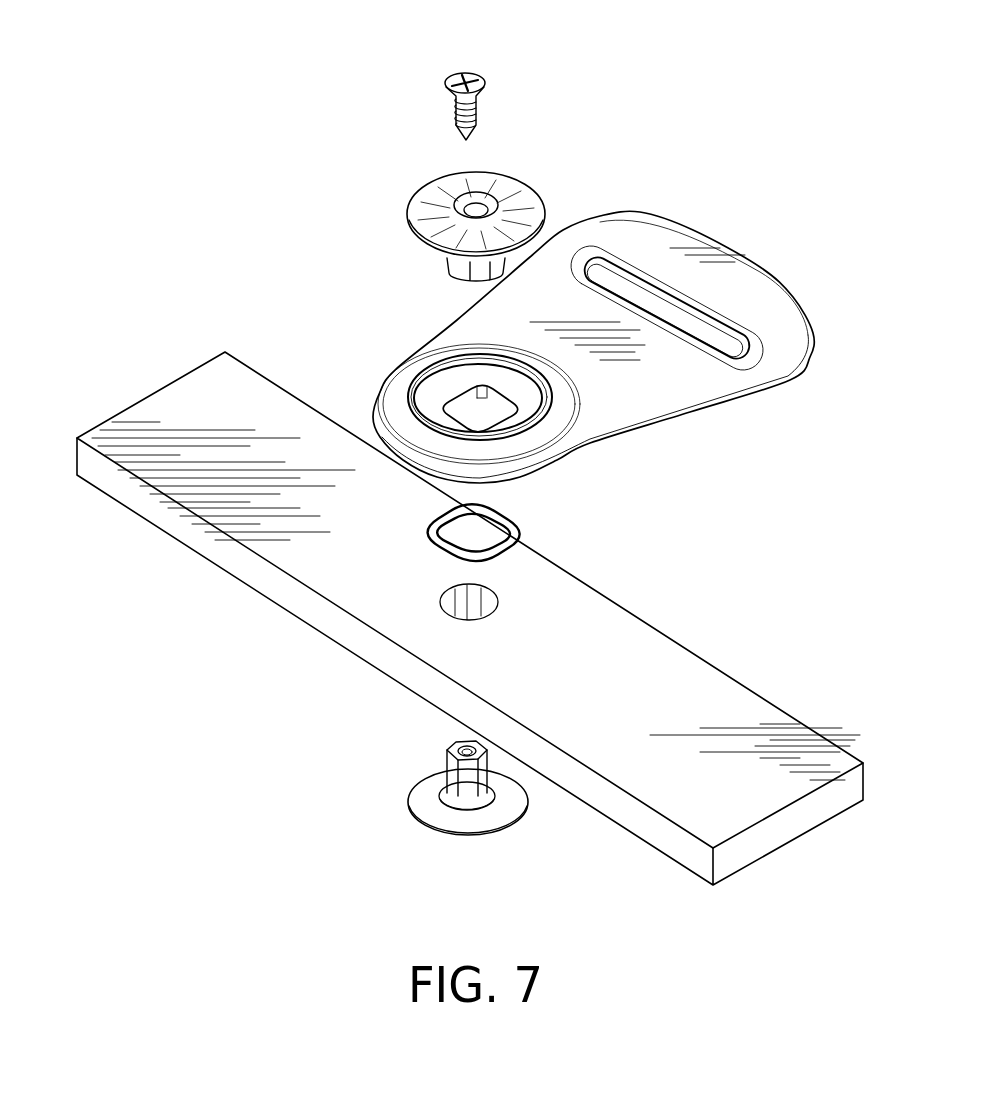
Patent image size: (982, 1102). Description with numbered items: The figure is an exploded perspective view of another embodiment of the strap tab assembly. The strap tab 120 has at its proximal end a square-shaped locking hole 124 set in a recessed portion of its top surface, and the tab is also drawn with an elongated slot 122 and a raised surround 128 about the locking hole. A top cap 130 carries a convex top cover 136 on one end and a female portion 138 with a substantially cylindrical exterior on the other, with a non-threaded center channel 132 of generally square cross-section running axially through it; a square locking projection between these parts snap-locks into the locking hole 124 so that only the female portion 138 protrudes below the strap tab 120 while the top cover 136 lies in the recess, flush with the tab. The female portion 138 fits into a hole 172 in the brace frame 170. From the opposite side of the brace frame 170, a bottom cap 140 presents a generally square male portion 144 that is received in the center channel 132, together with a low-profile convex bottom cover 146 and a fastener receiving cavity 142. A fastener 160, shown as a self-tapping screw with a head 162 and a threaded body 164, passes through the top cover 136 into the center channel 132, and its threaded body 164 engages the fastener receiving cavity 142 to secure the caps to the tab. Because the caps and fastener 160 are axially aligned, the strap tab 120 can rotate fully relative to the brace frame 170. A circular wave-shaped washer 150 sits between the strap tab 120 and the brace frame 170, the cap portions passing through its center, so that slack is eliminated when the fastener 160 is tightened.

The strap tab 120 is at (795, 392).
The slot 122 is at (663, 307).
The locking hole 124 is at (472, 413).
The raised boss 128 is at (527, 395).
The top cap 130 is at (487, 218).
The center channel 132 is at (478, 212).
The top cover 136 is at (427, 210).
The female portion 138 is at (443, 267).
The bottom cap 140 is at (455, 807).
The fastener receiving cavity 142 is at (467, 752).
The male portion 144 is at (445, 781).
The bottom cover 146 is at (420, 827).
The washer 150 is at (543, 532).
The fastener 160 is at (496, 76).
The head 162 is at (455, 75).
The threaded body 164 is at (457, 117).
The brace frame 170 is at (744, 676).
The hole 172 is at (457, 603).